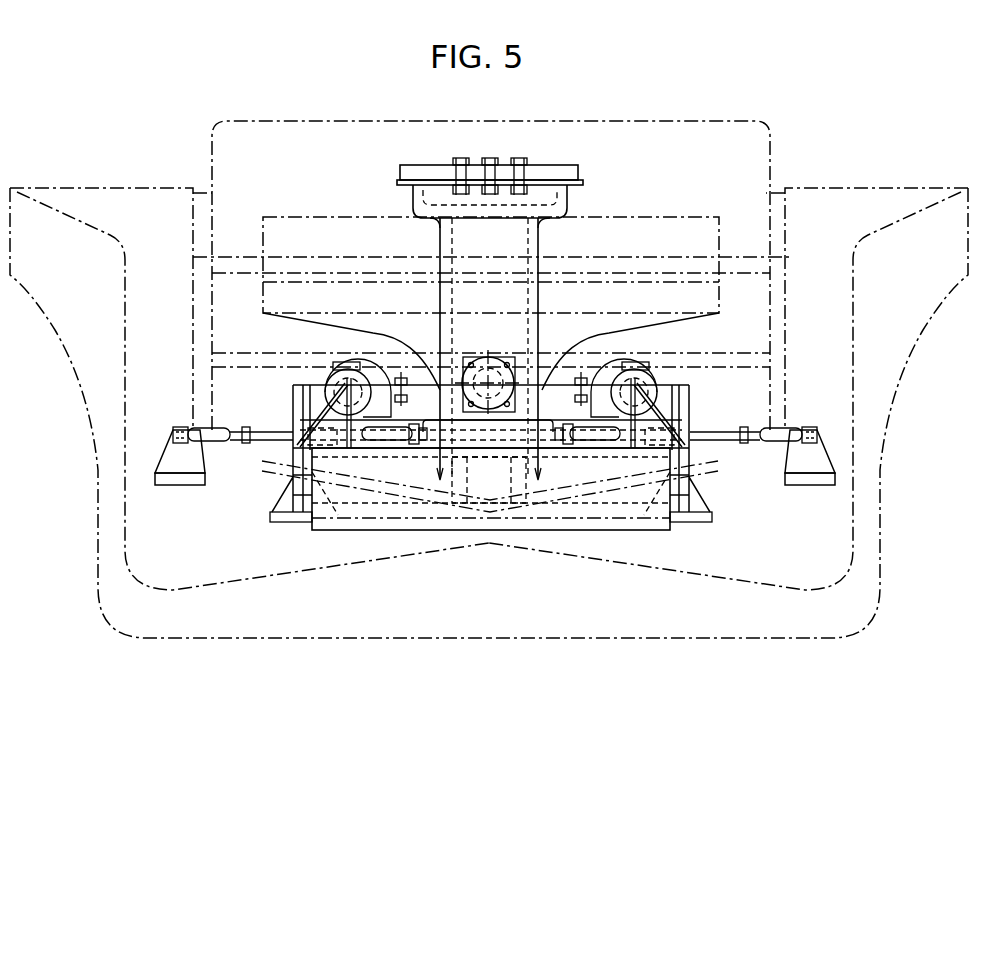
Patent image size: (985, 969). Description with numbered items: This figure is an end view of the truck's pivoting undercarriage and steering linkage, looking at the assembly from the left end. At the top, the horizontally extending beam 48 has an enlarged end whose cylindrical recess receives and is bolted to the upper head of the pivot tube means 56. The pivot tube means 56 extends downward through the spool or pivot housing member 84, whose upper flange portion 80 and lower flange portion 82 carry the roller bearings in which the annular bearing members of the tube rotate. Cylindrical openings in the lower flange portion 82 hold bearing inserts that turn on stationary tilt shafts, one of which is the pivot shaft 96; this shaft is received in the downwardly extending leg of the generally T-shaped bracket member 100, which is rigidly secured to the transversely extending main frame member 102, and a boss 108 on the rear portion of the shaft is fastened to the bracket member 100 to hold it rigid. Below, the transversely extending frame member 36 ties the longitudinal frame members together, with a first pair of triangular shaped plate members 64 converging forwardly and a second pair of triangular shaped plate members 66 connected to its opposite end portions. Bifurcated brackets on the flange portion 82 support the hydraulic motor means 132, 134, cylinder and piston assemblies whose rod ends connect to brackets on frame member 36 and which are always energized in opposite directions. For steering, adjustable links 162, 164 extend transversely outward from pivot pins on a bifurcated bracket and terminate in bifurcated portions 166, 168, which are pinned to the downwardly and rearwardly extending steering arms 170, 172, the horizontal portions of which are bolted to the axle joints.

The transversely extending frame member 36 is at (308, 385).
The horizontally extending beam 48 is at (557, 170).
The pivot tube means 56 is at (527, 280).
The triangular shaped plate members 64 is at (322, 412).
The triangular shaped plate members 66 is at (293, 390).
The upper flange portion 80 is at (560, 207).
The lower flange portion 82 is at (567, 418).
The spool or pivot housing member 84 is at (538, 243).
The pivot shaft 96 is at (492, 367).
The T-shaped bracket member 100 is at (645, 326).
The transversely extending main frame member 102 is at (631, 273).
The boss 108 is at (514, 372).
The hydraulic motor means 132 is at (656, 386).
The hydraulic motor means 134 is at (333, 374).
The adjustable link 162 is at (723, 428).
The adjustable link 164 is at (267, 441).
The bifurcated portion 166 is at (787, 427).
The bifurcated portion 168 is at (193, 426).
The steering arm 170 is at (816, 460).
The steering arm 172 is at (170, 452).